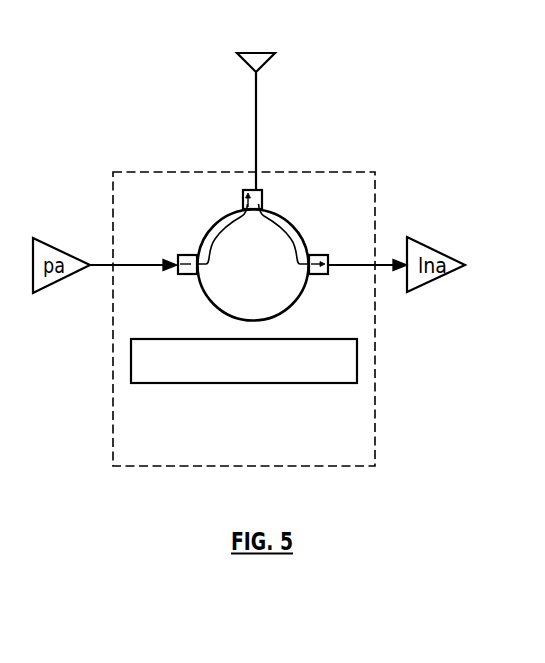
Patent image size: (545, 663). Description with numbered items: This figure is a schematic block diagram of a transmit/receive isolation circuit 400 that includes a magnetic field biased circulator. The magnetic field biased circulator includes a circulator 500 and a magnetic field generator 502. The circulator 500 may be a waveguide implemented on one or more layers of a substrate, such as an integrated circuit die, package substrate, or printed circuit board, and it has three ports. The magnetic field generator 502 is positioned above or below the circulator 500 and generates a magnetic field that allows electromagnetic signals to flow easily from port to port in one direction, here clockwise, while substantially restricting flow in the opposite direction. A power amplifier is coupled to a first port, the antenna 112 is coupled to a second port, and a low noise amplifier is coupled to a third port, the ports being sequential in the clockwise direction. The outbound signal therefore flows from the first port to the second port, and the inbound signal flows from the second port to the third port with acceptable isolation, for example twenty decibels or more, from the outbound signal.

The antenna 112 is at (271, 42).
The transmit/receive isolation circuit 400 is at (363, 457).
The circulator 500 is at (269, 278).
The magnetic field generator 502 is at (330, 374).